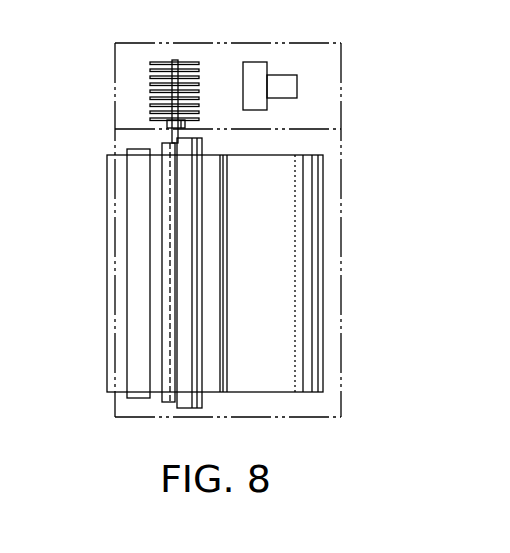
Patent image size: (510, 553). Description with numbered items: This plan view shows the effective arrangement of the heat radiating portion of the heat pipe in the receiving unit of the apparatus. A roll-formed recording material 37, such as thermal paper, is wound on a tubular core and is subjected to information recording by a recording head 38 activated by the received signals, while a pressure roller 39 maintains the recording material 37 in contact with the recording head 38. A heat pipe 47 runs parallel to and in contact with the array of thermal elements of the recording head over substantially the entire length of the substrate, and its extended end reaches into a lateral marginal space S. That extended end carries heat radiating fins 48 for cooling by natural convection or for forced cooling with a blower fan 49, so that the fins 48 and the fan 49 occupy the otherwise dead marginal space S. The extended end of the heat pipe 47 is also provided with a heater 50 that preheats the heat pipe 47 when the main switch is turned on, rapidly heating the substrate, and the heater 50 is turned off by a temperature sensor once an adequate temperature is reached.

The recording material 37 is at (313, 291).
The recording head 38 is at (165, 378).
The pressure roller 39 is at (197, 266).
The heat pipe 47 is at (176, 61).
The heat radiating fins 48 is at (155, 62).
The blower fan 49 is at (258, 68).
The heater 50 is at (186, 127).
The lateral marginal space S is at (316, 75).